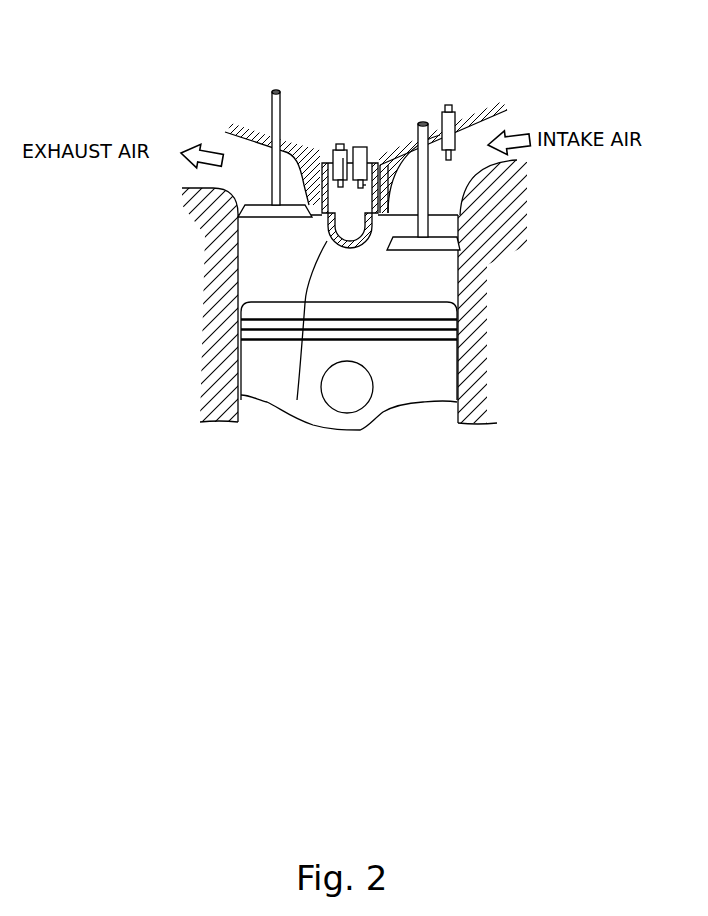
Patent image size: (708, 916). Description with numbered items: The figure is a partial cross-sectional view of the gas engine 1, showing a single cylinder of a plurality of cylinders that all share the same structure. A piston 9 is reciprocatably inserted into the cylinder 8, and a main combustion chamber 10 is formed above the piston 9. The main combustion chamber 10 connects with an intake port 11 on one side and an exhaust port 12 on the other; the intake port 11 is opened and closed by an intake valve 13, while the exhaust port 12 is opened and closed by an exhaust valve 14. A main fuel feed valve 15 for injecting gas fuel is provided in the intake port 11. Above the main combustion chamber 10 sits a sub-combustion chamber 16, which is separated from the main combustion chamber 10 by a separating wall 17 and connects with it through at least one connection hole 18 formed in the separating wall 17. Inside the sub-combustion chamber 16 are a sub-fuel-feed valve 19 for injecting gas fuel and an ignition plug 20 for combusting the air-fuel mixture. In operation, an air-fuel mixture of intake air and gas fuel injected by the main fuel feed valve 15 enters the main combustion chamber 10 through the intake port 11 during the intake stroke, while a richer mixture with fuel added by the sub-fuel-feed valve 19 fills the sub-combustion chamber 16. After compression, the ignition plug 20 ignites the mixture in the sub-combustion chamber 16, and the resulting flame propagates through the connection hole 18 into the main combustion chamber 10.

The gas engine 1 is at (603, 87).
The cylinder 8 is at (458, 362).
The piston 9 is at (403, 372).
The main combustion chamber 10 is at (443, 283).
The intake port 11 is at (478, 165).
The exhaust port 12 is at (260, 167).
The intake valve 13 is at (440, 250).
The exhaust valve 14 is at (277, 117).
The main fuel feed valve 15 is at (455, 137).
The sub-combustion chamber 16 is at (343, 193).
The separating wall 17 is at (389, 136).
The connection hole 18 is at (376, 250).
The sub-fuel-feed valve 19 is at (334, 158).
The ignition plug 20 is at (368, 148).